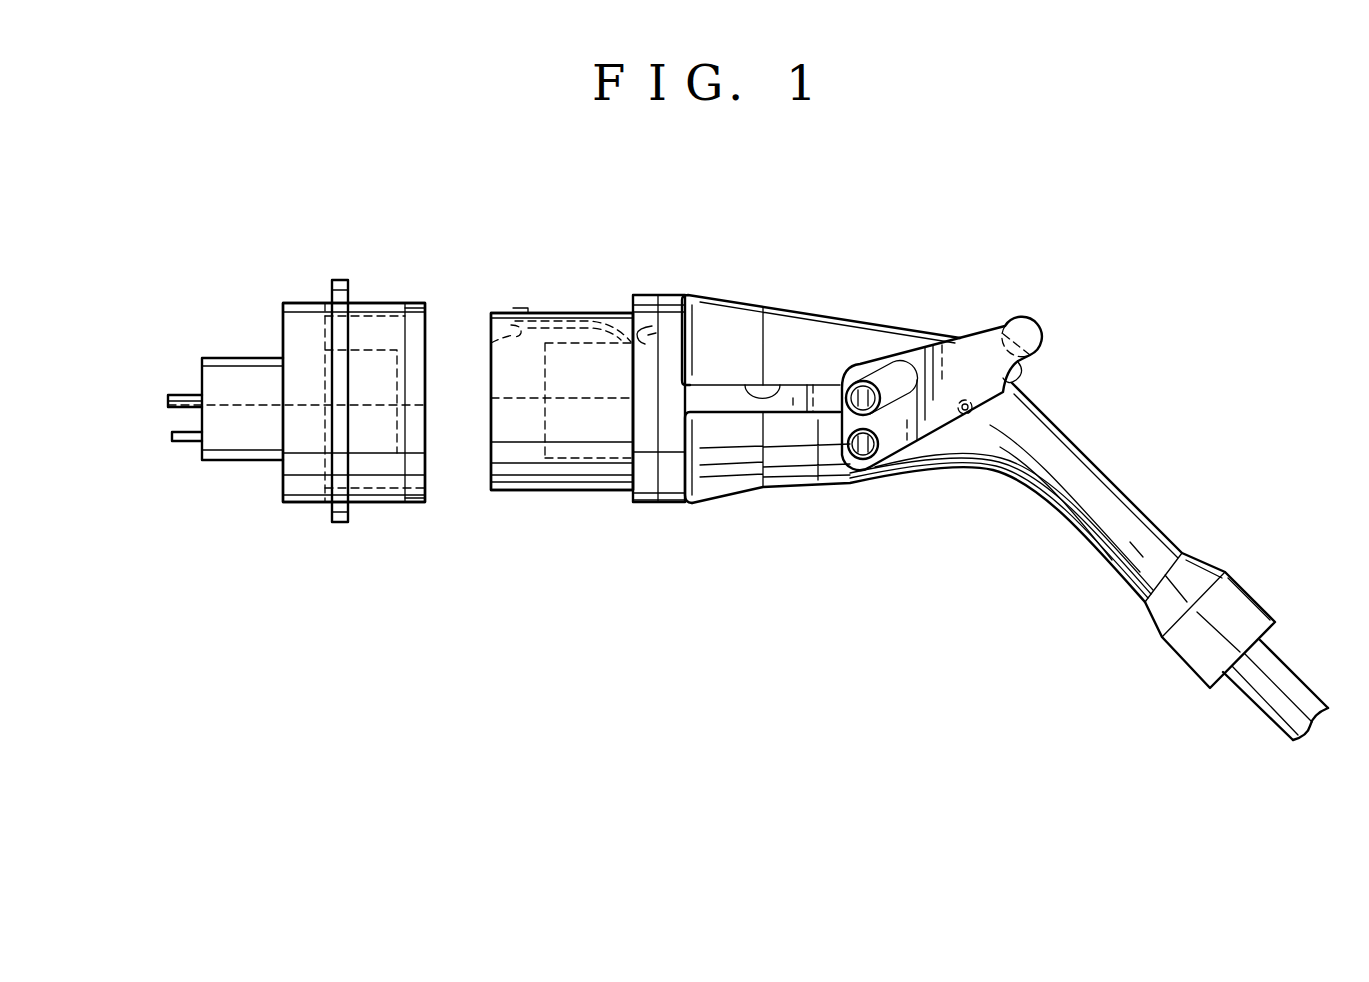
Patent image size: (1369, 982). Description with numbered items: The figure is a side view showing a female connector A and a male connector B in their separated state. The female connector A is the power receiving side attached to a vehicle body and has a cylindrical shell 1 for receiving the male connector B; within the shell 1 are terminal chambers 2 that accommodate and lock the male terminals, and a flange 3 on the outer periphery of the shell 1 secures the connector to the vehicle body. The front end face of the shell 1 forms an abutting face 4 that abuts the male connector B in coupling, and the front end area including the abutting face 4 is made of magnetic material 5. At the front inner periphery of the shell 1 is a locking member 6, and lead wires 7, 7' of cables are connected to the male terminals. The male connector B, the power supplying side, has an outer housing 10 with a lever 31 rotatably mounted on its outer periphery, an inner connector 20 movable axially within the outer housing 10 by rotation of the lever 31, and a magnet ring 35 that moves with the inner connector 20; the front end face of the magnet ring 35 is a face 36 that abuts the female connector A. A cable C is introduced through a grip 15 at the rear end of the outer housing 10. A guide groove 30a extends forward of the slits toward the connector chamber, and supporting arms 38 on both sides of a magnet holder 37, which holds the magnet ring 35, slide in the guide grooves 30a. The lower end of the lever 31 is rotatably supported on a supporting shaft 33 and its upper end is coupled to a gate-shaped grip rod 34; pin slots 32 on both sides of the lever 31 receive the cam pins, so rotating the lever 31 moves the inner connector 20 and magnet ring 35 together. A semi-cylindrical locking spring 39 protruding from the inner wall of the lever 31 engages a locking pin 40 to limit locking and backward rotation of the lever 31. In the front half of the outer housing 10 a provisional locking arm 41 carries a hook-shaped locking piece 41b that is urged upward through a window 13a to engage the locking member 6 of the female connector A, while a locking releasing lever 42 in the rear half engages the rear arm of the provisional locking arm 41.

The female connector A is at (290, 283).
The male connector B is at (768, 285).
The cable C is at (1255, 678).
The cylindrical shell 1 is at (385, 503).
The terminal chambers 2 is at (381, 455).
The flange 3 is at (340, 523).
The abutting face 4 is at (423, 469).
The magnetic material 5 is at (412, 303).
The locking member 6 is at (378, 302).
The lead wire 7 is at (171, 354).
The lead wire 7' is at (184, 491).
The outer housing 10 is at (797, 490).
The window 13a is at (491, 343).
The grip 15 is at (1130, 497).
The inner connector 20 is at (566, 460).
The guide groove 30a is at (778, 387).
The lever 31 is at (958, 332).
The pin slots 32 is at (882, 368).
The supporting shaft 33 is at (863, 460).
The grip rod 34 is at (1044, 322).
The magnet ring 35 is at (641, 504).
The face 36 is at (627, 470).
The magnet holder 37 is at (712, 342).
The supporting arms 38 is at (731, 402).
The locking spring 39 is at (960, 412).
The locking pin 40 is at (997, 445).
The provisional locking arm 41 is at (588, 313).
The locking piece 41b is at (525, 312).
The locking releasing lever 42 is at (1017, 380).